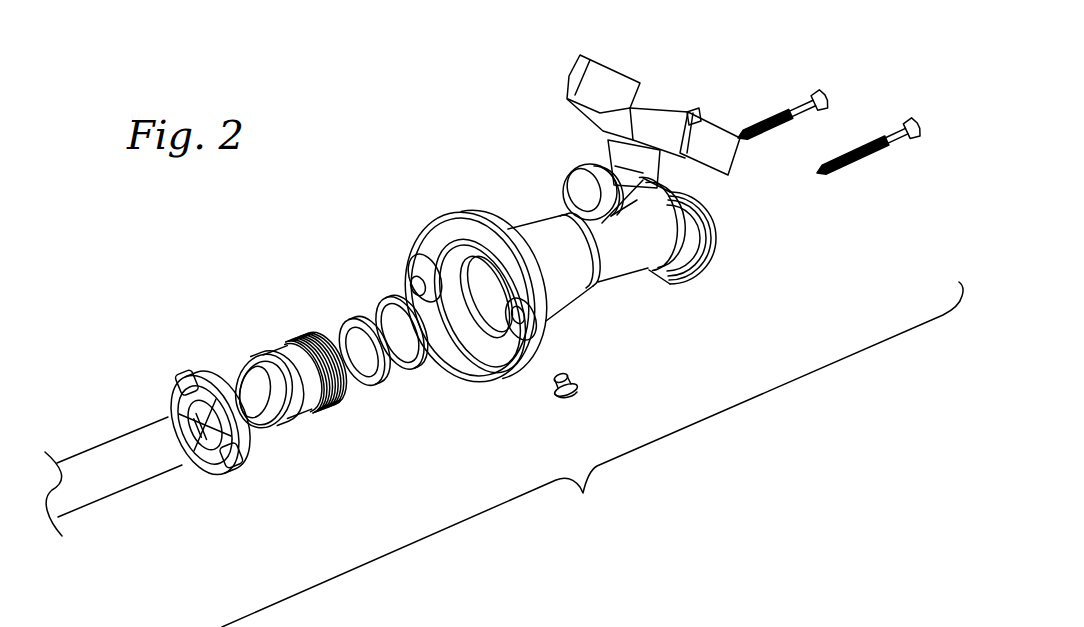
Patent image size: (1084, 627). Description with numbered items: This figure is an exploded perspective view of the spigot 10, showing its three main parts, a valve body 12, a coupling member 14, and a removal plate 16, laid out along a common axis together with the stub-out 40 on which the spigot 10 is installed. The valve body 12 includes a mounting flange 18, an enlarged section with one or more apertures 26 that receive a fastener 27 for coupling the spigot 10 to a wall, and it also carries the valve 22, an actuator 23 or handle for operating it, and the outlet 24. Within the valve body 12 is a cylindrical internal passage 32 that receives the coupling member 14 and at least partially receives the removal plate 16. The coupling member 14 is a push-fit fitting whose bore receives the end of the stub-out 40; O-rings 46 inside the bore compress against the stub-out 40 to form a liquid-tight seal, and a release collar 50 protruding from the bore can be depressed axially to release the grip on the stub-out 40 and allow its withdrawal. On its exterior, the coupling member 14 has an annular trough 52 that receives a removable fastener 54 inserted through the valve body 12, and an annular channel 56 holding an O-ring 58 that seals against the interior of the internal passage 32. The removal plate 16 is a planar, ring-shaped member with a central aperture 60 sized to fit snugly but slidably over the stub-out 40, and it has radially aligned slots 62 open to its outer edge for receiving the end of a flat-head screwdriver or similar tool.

The spigot 10 is at (592, 454).
The valve body 12 is at (622, 233).
The coupling member 14 is at (303, 378).
The removal plate 16 is at (198, 431).
The mounting flange 18 is at (476, 305).
The valve 22 is at (653, 99).
The actuator 23 is at (620, 68).
The outlet 24 is at (706, 264).
The apertures 26 is at (412, 266).
The fastener 27 is at (789, 110).
The internal passage 32 is at (471, 325).
The stub-out 40 is at (120, 434).
The O-rings 46 is at (356, 318).
The release collar 50 is at (237, 380).
The annular trough 52 is at (303, 343).
The removable fastener 54 is at (578, 389).
The annular channel 56 is at (341, 403).
The O-ring 58 is at (393, 300).
The aperture 60 is at (193, 444).
The slots 62 is at (180, 397).